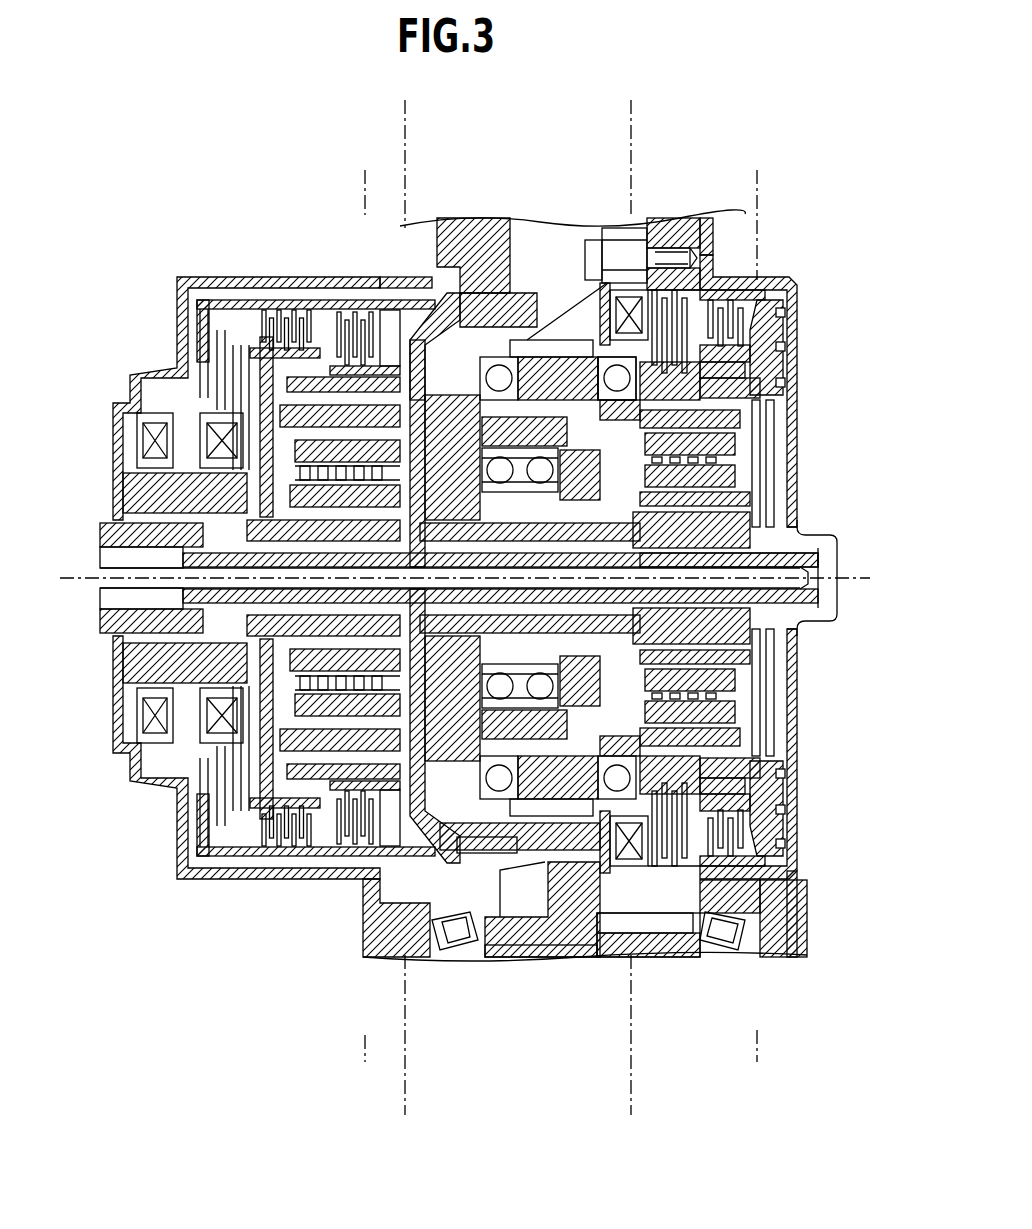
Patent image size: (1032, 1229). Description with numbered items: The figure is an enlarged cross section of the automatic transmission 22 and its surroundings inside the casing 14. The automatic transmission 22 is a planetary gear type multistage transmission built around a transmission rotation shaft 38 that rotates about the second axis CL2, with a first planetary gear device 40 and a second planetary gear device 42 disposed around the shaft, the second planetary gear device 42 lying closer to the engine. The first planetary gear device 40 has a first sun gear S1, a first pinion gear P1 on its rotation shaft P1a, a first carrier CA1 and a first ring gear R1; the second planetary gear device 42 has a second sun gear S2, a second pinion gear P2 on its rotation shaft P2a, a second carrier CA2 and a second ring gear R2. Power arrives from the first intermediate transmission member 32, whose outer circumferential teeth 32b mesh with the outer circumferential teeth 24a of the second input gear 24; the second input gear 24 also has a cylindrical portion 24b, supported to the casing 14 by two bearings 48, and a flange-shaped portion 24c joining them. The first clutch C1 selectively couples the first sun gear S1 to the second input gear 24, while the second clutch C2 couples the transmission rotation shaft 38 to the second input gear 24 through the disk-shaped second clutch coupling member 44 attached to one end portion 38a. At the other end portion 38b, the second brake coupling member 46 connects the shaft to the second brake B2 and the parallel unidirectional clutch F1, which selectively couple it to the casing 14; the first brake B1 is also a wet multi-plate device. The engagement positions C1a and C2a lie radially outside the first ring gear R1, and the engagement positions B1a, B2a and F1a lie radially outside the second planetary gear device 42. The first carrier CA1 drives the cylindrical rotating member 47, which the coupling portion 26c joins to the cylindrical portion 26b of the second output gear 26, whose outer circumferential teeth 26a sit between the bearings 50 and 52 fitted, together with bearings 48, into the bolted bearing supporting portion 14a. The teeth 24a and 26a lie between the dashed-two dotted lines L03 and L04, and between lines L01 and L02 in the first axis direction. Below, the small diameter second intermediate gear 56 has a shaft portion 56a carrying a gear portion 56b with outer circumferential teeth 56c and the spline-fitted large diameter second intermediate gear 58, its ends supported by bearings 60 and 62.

The casing 14 is at (177, 322).
The bearing supporting portion 14a is at (614, 235).
The automatic transmission 22 is at (104, 263).
The second input gear 24 is at (445, 300).
The outer circumferential teeth 24a is at (497, 853).
The cylindrical portion 24b is at (562, 692).
The flange-shaped portion 24c is at (430, 378).
The second output gear 26 is at (586, 368).
The outer circumferential teeth 26a is at (547, 356).
The cylindrical portion 26b is at (560, 432).
The coupling portion 26c is at (593, 486).
The first intermediate transmission member 32 is at (518, 242).
The outer circumferential teeth 32b is at (530, 300).
The transmission rotation shaft 38 is at (828, 560).
The one end portion 38a is at (278, 566).
The other end portion 38b is at (742, 566).
The first planetary gear device 40 is at (420, 800).
The second planetary gear device 42 is at (778, 723).
The second clutch coupling member 44 is at (260, 370).
The second brake coupling member 46 is at (768, 445).
The rotating member 47 is at (527, 548).
The bearings 48 is at (542, 703).
The bearing 50 is at (512, 372).
The bearing 52 is at (634, 388).
The small diameter second intermediate gear 56 is at (652, 968).
The shaft portion 56a is at (546, 958).
The gear portion 56b is at (618, 945).
The outer circumferential teeth 56c is at (684, 935).
The large diameter second intermediate gear 58 is at (540, 912).
The bearing 60 is at (733, 950).
The bearing 62 is at (458, 950).
The first brake B1 is at (600, 300).
The engagement position B1a is at (668, 290).
The second brake B2 is at (780, 294).
The engagement position B2a is at (742, 283).
The first clutch C1 is at (350, 288).
The engagement position C1a is at (376, 362).
The second clutch C2 is at (293, 298).
The engagement position C2a is at (318, 336).
The first carrier CA1 is at (428, 822).
The second carrier CA2 is at (678, 543).
The second axis CL2 is at (78, 578).
The unidirectional clutch F1 is at (768, 401).
The engagement position F1a is at (735, 373).
The dashed-two dotted line L01 is at (757, 192).
The dashed-two dotted line L02 is at (365, 180).
The dashed-two dotted line L03 is at (405, 124).
The dashed-two dotted line L04 is at (631, 124).
The first pinion gear P1 is at (372, 726).
The rotation shaft P1a is at (300, 758).
The second pinion gear P2 is at (726, 646).
The rotation shaft P2a is at (745, 697).
The first ring gear R1 is at (394, 790).
The second ring gear R2 is at (658, 746).
The first sun gear S1 is at (322, 627).
The second sun gear S2 is at (700, 642).